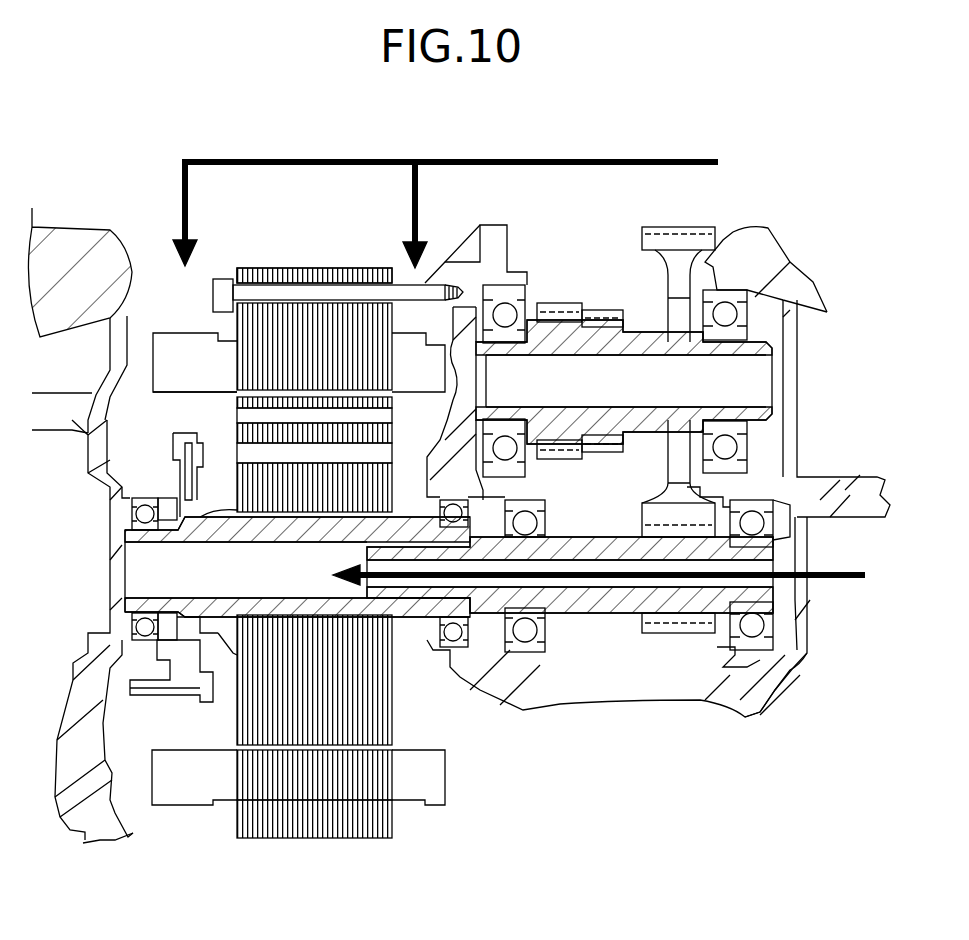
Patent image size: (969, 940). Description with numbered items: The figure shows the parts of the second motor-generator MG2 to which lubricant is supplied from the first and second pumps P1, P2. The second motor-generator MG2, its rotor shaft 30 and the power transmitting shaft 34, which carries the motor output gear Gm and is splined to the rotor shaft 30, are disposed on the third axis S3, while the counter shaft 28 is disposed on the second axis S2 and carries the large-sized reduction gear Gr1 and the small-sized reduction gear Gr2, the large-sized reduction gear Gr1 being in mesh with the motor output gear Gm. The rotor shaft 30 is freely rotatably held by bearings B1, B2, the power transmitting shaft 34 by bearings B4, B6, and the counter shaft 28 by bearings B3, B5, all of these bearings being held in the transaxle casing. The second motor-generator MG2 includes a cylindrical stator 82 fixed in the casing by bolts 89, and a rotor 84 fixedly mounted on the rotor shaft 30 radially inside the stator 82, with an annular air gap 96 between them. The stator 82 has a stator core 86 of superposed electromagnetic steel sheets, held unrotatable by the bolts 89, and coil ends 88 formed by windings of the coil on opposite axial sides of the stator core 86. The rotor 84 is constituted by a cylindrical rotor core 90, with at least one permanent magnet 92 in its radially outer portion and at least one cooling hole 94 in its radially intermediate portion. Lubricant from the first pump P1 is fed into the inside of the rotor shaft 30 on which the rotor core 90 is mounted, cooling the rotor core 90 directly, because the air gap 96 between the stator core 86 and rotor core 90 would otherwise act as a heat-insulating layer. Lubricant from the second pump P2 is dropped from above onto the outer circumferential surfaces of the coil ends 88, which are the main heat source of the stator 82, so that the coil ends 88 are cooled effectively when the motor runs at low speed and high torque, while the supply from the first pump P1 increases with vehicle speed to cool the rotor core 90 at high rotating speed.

The stator 82 is at (150, 226).
The rotor 84 is at (418, 702).
The stator core 86 is at (332, 290).
The coil ends 88 is at (192, 333).
The bolts 89 is at (222, 280).
The rotor core 90 is at (240, 717).
The permanent magnet 92 is at (383, 410).
The cooling hole 94 is at (380, 448).
The air gap 96 is at (205, 392).
The rotor shaft 30 is at (205, 503).
The power transmitting shaft 34 is at (603, 545).
The counter shaft 28 is at (652, 422).
The second motor-generator MG2 is at (287, 140).
The large-sized reduction gear Gr1 is at (652, 228).
The small-sized reduction gear Gr2 is at (578, 303).
The motor output gear Gm is at (660, 633).
The bearing B1 is at (130, 617).
The bearing B2 is at (440, 630).
The bearing B3 is at (535, 300).
The bearing B4 is at (548, 510).
The bearing B5 is at (745, 330).
The bearing B6 is at (767, 647).
The second axis S2 is at (470, 381).
The third axis S3 is at (330, 575).
The first pump P1 is at (627, 575).
The second pump P2 is at (473, 202).